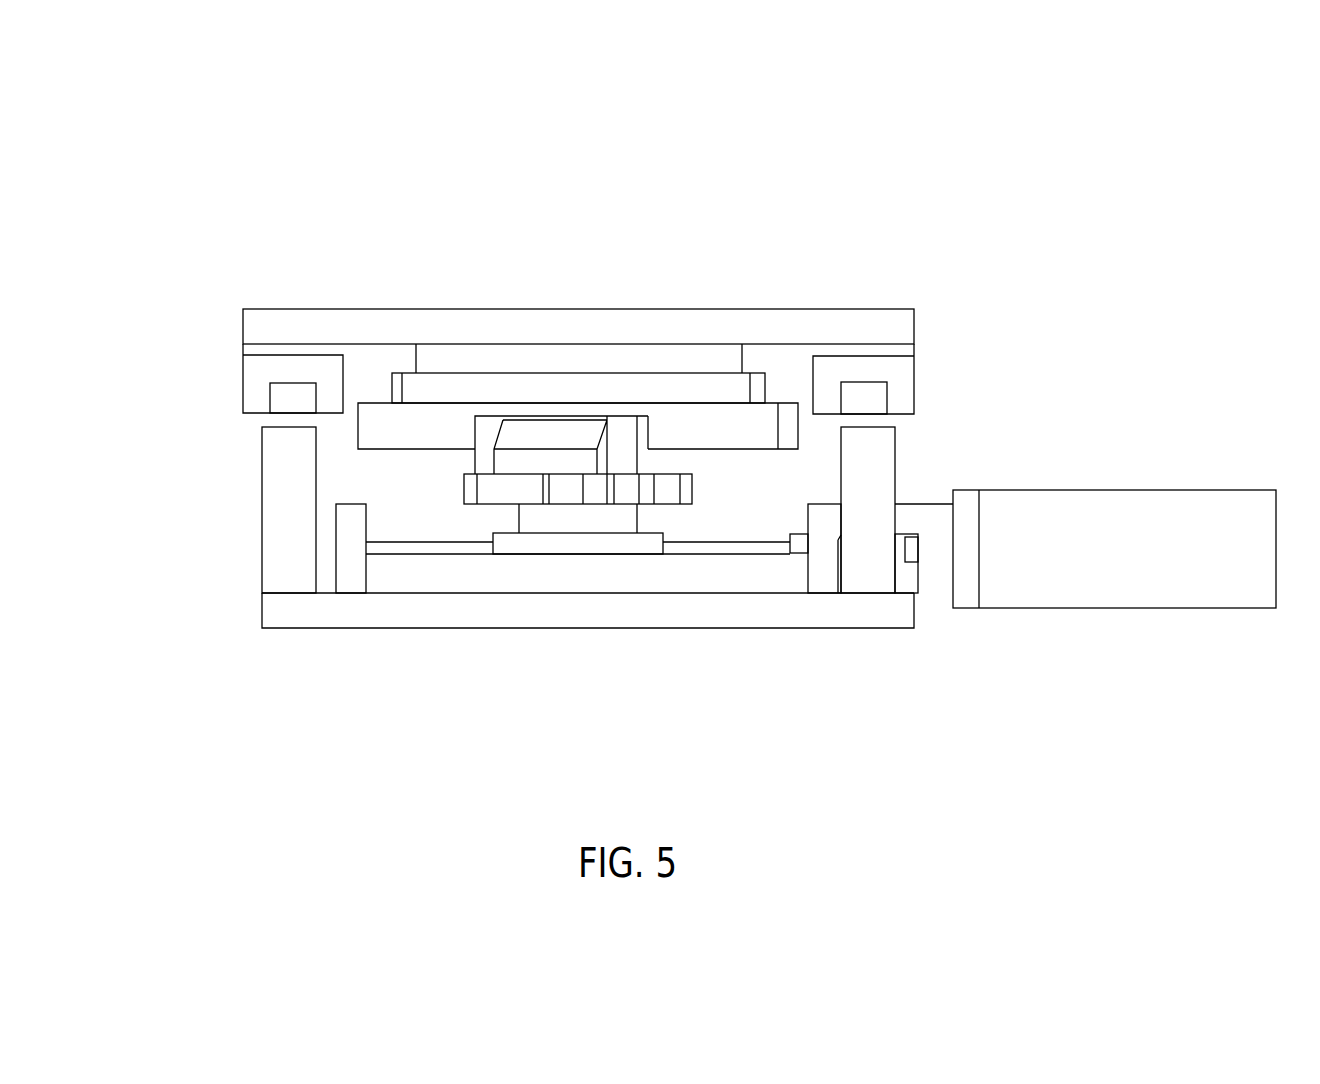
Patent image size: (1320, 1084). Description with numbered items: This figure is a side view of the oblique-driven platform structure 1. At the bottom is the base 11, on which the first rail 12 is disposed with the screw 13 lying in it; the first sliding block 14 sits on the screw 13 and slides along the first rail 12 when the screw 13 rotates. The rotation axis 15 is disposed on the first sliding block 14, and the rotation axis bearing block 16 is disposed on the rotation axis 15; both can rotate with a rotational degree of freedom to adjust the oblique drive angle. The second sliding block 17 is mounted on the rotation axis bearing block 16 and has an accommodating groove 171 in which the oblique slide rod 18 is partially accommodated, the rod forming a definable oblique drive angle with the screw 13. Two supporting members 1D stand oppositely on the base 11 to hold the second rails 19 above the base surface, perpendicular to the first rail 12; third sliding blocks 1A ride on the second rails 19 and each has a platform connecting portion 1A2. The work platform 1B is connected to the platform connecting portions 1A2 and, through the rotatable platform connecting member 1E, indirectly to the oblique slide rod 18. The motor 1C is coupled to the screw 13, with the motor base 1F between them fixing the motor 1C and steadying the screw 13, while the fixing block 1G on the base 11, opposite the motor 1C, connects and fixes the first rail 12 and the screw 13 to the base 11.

The oblique-driven platform structure 1 is at (210, 182).
The third sliding block 1A is at (250, 392).
The platform connecting portion 1A2 is at (267, 348).
The work platform 1B is at (888, 318).
The motor 1C is at (1127, 508).
The supporting member 1D is at (272, 552).
The platform connecting member 1E is at (757, 383).
The motor base 1F is at (900, 508).
The fixing block 1G is at (350, 576).
The base 11 is at (529, 618).
The first rail 12 is at (488, 582).
The screw 13 is at (427, 545).
The first sliding block 14 is at (620, 547).
The rotation axis 15 is at (545, 523).
The rotation axis bearing block 16 is at (577, 495).
The second sliding block 17 is at (523, 438).
The accommodating groove 171 is at (649, 427).
The oblique slide rod 18 is at (377, 424).
The second rail 19 is at (875, 402).